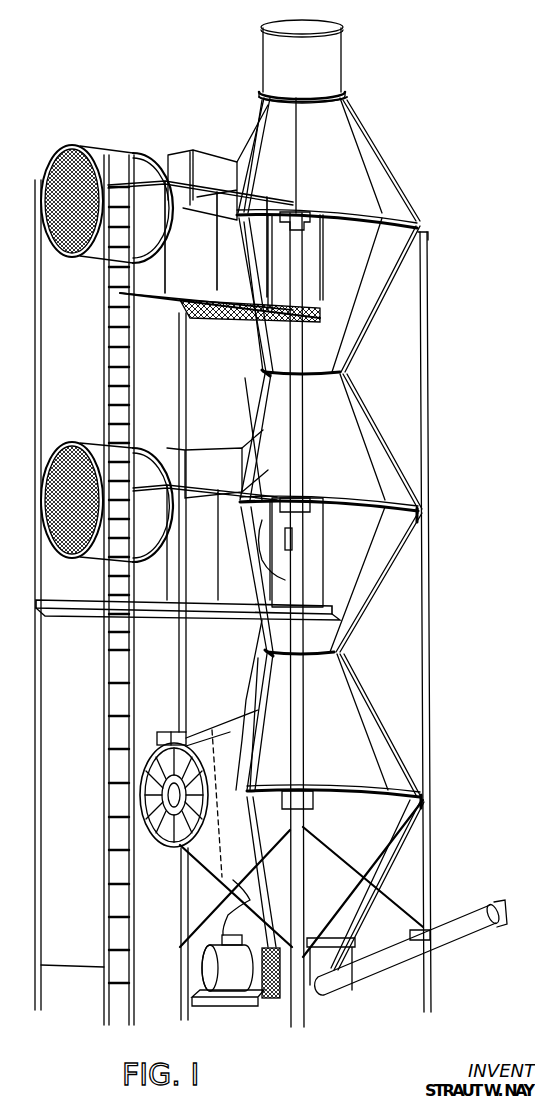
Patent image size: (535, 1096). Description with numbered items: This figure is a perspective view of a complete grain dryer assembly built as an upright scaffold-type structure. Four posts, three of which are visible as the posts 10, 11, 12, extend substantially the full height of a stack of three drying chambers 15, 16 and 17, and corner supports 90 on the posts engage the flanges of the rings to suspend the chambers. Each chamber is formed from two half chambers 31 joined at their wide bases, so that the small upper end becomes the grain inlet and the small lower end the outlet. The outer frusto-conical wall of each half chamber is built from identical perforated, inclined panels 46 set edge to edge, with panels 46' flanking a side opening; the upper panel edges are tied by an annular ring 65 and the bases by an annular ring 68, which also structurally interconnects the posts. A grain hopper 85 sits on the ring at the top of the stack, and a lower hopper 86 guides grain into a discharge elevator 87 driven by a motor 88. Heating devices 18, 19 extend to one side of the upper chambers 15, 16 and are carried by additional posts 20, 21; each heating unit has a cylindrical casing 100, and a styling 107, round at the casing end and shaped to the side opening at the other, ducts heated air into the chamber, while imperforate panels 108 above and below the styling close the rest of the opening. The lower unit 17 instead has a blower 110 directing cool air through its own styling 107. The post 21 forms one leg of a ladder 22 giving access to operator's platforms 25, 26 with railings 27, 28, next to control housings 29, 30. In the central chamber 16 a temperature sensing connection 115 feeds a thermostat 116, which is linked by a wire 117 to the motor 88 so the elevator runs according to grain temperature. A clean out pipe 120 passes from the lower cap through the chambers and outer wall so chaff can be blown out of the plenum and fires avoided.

The post 10 is at (185, 1008).
The post 11 is at (305, 1018).
The post 12 is at (431, 992).
The upper drying chamber 15 is at (412, 193).
The central drying chamber 16 is at (411, 455).
The lower drying chamber 17 is at (426, 733).
The heating device 18 is at (173, 156).
The heating device 19 is at (169, 441).
The additional post 20 is at (40, 965).
The additional post 21 is at (104, 968).
The ladder 22 is at (140, 685).
The operator's platform 25 is at (228, 297).
The operator's platform 26 is at (236, 616).
The railing 27 is at (205, 160).
The railing 28 is at (210, 485).
The housing 29 is at (222, 165).
The housing 30 is at (238, 486).
The half chamber 31 is at (387, 159).
The perforated outer panel 46 is at (333, 488).
The outer panel adjacent side opening 46' is at (273, 460).
The annular ring 65 is at (350, 91).
The annular ring 68 is at (426, 216).
The grain hopper 85 is at (332, 58).
The lower grain hopper 86 is at (272, 1000).
The discharge elevator 87 is at (440, 932).
The motor 88 is at (229, 978).
The corner support 90 is at (422, 511).
The cylindrical casing 100 is at (163, 215).
The styling 107 is at (208, 251).
The imperforate panel 108 is at (254, 150).
The blower 110 is at (168, 848).
The temperature sensing device connection 115 is at (262, 527).
The thermostat 116 is at (293, 541).
The wire 117 is at (243, 640).
The clean out pipe 120 is at (263, 372).